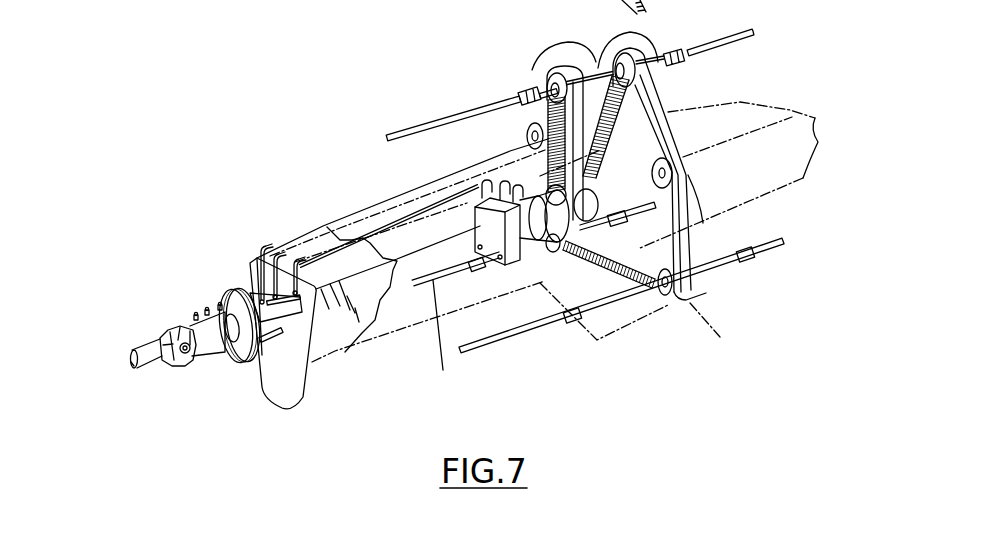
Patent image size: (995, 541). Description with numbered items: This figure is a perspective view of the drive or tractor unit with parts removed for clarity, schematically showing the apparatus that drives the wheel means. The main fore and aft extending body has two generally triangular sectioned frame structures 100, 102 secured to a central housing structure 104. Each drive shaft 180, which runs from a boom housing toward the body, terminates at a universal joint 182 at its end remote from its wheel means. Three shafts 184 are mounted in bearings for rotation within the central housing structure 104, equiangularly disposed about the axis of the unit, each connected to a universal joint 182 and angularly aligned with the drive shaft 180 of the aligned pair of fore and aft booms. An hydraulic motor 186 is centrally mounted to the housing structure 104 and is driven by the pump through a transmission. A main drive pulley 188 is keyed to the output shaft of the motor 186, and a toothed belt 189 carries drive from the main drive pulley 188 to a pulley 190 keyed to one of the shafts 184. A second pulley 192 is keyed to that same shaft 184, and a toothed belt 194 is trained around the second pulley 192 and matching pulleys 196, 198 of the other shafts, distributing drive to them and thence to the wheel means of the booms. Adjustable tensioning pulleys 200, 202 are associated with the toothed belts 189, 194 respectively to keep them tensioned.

The frame structure 100 is at (355, 375).
The frame structure 102 is at (795, 122).
The central housing structure 104 is at (700, 318).
The drive shaft 180 is at (412, 122).
The universal joint 182 is at (525, 92).
The shaft 184 is at (625, 47).
The hydraulic motor 186 is at (533, 237).
The main drive pulley 188 is at (603, 200).
The toothed belt 189 is at (510, 148).
The pulley 190 is at (583, 62).
The second pulley 192 is at (617, 98).
The toothed belt 194 is at (680, 226).
The pulley 196 is at (668, 292).
The pulley 198 is at (585, 228).
The adjustable tensioning pulley 200 is at (527, 136).
The adjustable tensioning pulley 202 is at (672, 158).